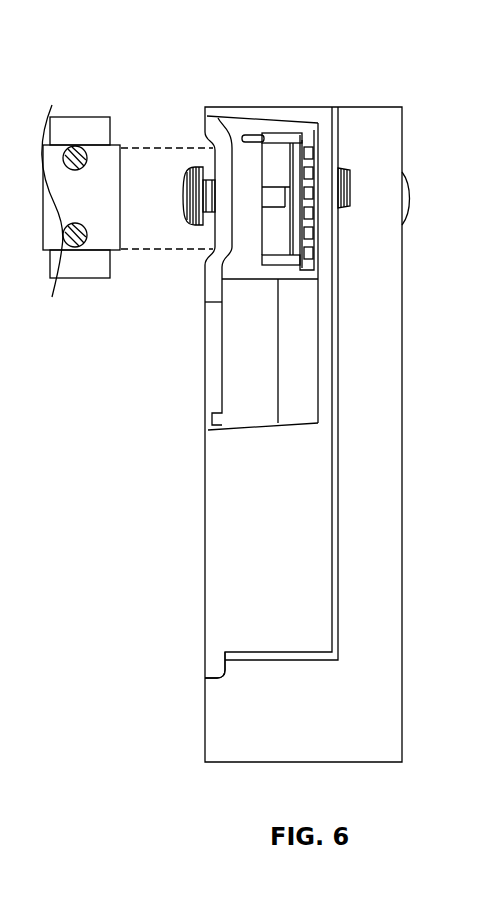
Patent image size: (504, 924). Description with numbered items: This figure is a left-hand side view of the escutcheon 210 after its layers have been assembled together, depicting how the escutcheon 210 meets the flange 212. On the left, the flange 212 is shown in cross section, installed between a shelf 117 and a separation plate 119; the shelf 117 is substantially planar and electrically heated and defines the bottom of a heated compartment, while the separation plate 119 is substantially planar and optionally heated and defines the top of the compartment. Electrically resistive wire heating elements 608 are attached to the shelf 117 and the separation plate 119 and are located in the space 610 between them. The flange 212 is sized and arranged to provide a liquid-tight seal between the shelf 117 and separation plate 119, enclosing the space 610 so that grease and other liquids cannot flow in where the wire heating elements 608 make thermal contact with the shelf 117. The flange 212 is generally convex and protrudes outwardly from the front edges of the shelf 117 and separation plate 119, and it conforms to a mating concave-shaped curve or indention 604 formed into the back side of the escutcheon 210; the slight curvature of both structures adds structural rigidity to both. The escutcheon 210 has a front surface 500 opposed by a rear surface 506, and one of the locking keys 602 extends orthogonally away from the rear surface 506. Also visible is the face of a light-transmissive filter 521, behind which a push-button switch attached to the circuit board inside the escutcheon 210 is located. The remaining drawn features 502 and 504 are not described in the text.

The escutcheon 210 is at (407, 62).
The front surface 500 is at (402, 472).
The front wall 502 is at (318, 106).
The cavity 504 is at (385, 633).
The rear surface 506 is at (205, 627).
The light-transmissive filter 521 is at (407, 198).
The locking key 602 is at (187, 198).
The indention 604 is at (220, 157).
The wire heating element 608 is at (78, 147).
The space 610 is at (101, 208).
The shelf 117 is at (102, 116).
The separation plate 119 is at (92, 280).
The flange 212 is at (121, 151).